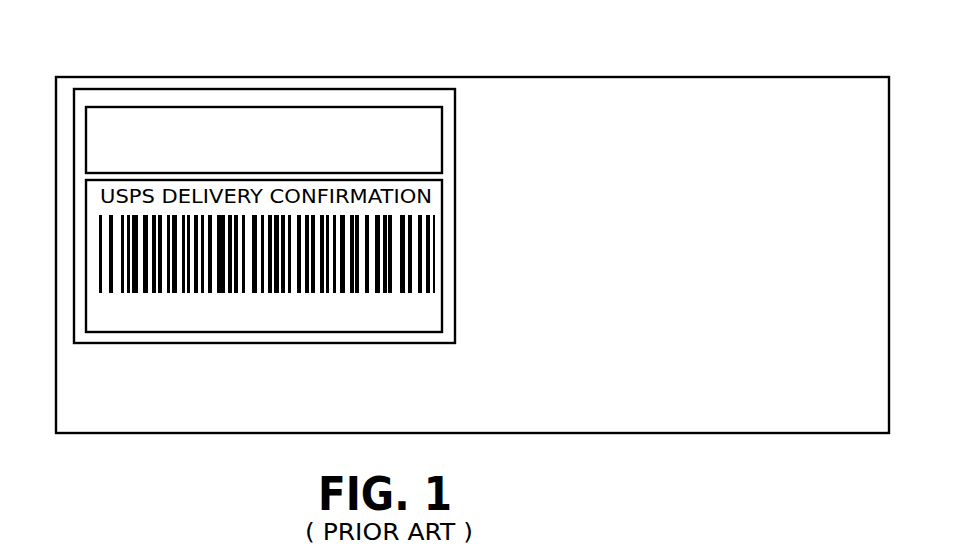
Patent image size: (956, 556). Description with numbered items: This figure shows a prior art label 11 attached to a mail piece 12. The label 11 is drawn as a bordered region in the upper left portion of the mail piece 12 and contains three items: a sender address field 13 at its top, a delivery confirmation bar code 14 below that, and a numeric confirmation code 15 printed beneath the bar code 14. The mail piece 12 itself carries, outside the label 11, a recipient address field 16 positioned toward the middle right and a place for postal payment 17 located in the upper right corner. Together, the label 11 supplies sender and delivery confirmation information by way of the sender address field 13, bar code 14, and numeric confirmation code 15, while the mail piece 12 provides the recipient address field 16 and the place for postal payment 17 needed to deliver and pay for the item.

The prior art label 11 is at (88, 193).
The mail piece 12 is at (348, 87).
The sender address field 13 is at (204, 125).
The delivery confirmation bar code 14 is at (93, 252).
The numeric confirmation code 15 is at (112, 314).
The recipient address field 16 is at (592, 250).
The place for postal payment 17 is at (761, 97).